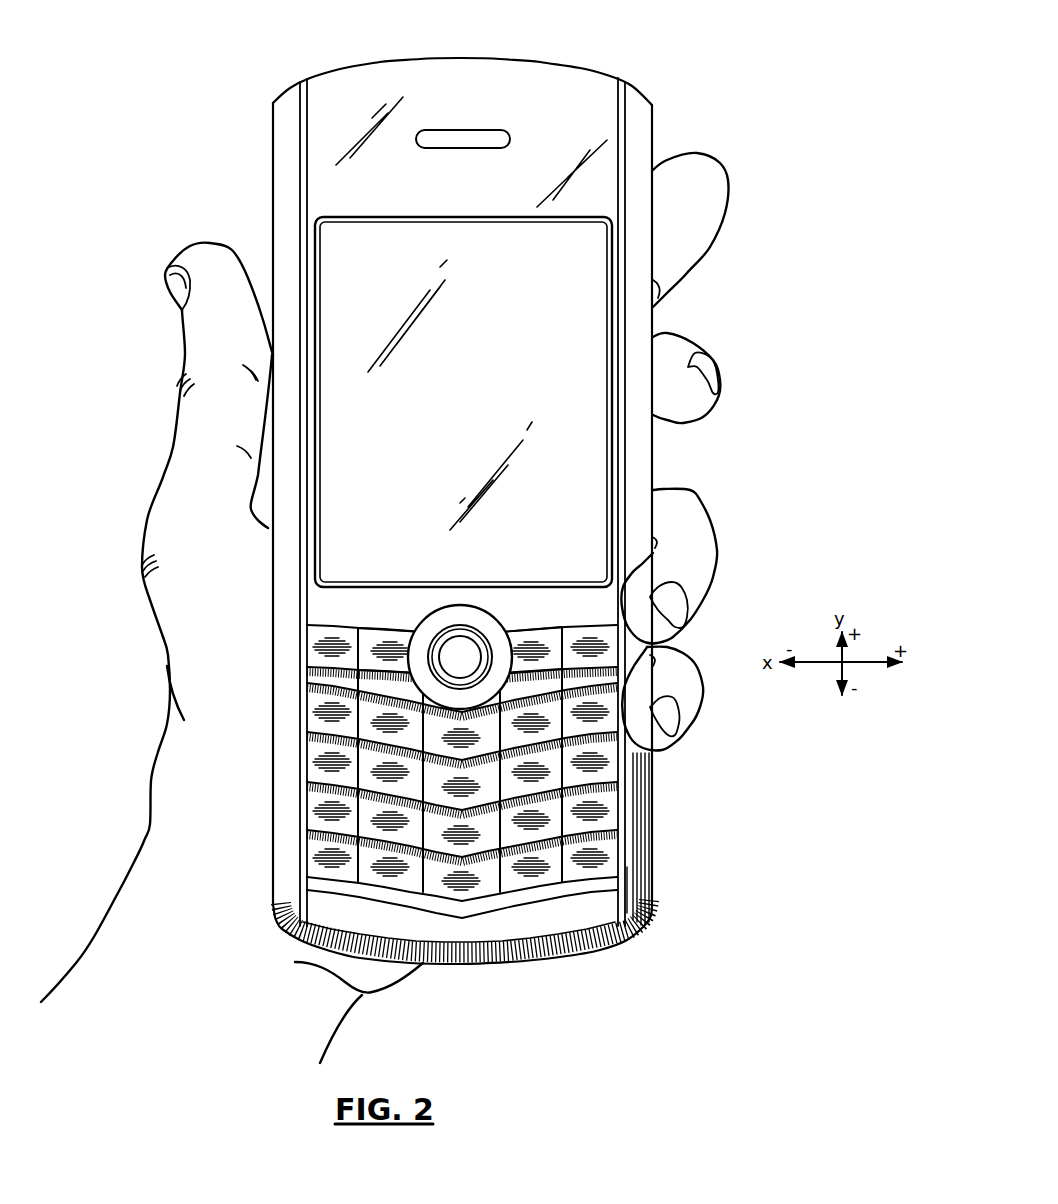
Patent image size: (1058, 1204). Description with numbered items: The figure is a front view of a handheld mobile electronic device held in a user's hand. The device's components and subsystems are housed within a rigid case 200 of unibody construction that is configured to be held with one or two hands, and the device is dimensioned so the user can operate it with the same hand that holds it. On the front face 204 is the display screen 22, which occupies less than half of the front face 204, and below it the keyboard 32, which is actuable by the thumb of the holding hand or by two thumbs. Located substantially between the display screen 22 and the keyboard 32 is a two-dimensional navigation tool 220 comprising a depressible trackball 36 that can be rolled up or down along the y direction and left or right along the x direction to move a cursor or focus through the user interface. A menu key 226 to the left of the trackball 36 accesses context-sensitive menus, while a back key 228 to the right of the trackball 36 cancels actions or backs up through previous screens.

The rigid case 200 is at (592, 72).
The front face 204 is at (598, 106).
The display screen 22 is at (578, 381).
The two-dimensional navigation tool 220 is at (601, 575).
The trackball 36 is at (462, 658).
The menu key 226 is at (385, 650).
The back key 228 is at (547, 655).
The keyboard 32 is at (439, 679).